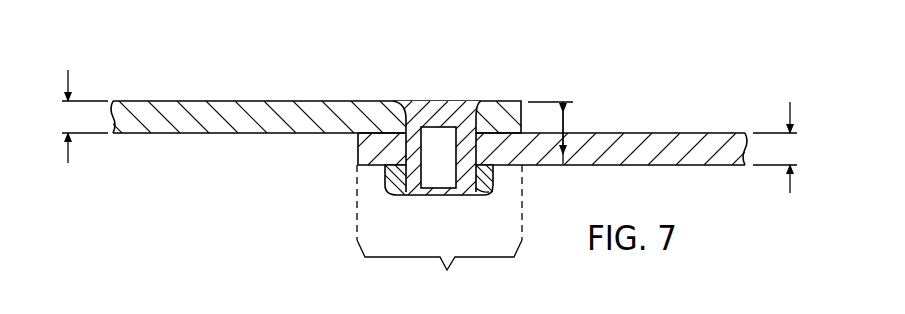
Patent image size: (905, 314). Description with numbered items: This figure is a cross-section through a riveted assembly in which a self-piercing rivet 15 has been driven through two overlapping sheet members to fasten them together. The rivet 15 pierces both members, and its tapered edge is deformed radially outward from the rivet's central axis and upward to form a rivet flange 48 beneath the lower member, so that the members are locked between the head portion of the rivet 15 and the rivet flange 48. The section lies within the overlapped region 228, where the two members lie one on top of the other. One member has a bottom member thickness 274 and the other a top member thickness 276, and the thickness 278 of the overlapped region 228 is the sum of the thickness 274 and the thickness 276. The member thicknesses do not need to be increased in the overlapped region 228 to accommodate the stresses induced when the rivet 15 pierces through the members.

The self-piercing rivet 15 is at (460, 108).
The rivet flange 48 is at (478, 191).
The overlapped region 228 is at (439, 233).
The bottom member thickness 274 is at (65, 117).
The top member thickness 276 is at (793, 147).
The thickness of the overlapped region 278 is at (563, 130).